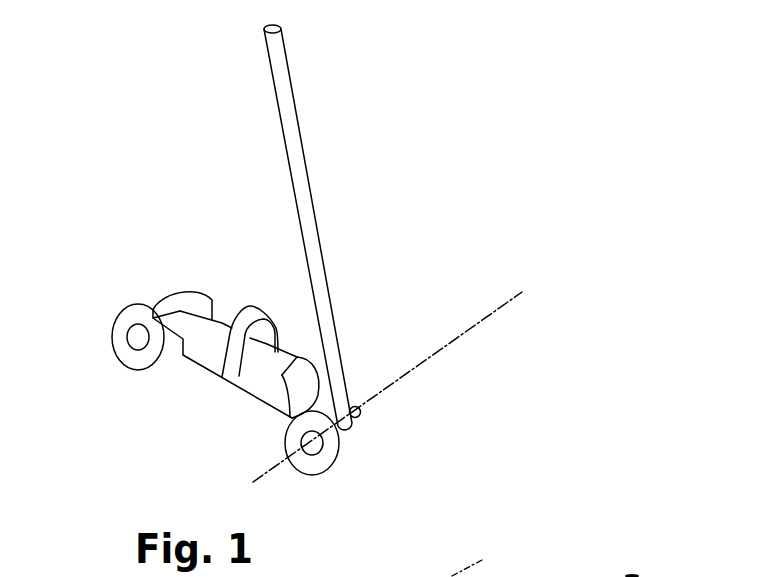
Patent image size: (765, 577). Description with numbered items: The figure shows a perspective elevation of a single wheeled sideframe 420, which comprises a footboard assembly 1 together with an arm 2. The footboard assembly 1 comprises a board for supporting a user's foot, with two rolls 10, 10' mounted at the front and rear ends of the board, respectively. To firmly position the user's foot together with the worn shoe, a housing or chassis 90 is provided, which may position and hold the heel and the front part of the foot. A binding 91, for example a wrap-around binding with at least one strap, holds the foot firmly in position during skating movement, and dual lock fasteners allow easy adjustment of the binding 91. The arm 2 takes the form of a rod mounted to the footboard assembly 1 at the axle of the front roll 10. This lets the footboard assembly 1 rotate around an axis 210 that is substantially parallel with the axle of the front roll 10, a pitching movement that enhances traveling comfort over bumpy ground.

The sideframe 420 is at (344, 135).
The arm 2 is at (325, 265).
The footboard assembly 1 is at (202, 370).
The housing or chassis 90 is at (303, 395).
The binding 91 is at (233, 378).
The rear roll 10' is at (93, 359).
The front roll 10 is at (346, 443).
The axis 210 is at (418, 365).